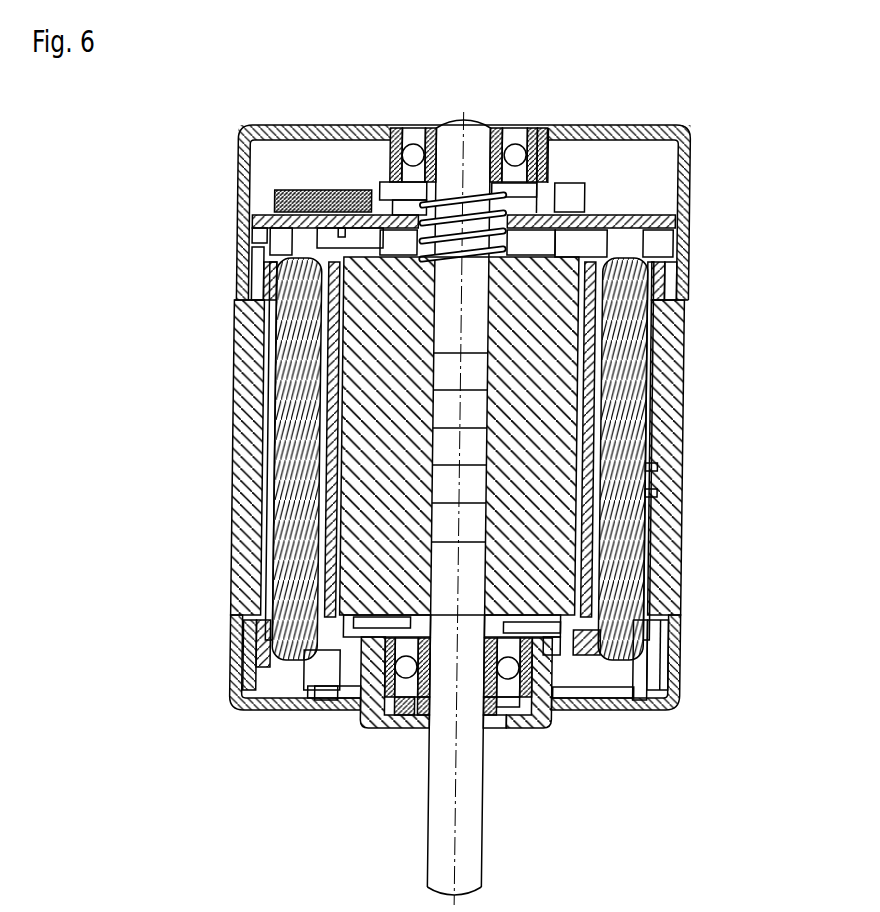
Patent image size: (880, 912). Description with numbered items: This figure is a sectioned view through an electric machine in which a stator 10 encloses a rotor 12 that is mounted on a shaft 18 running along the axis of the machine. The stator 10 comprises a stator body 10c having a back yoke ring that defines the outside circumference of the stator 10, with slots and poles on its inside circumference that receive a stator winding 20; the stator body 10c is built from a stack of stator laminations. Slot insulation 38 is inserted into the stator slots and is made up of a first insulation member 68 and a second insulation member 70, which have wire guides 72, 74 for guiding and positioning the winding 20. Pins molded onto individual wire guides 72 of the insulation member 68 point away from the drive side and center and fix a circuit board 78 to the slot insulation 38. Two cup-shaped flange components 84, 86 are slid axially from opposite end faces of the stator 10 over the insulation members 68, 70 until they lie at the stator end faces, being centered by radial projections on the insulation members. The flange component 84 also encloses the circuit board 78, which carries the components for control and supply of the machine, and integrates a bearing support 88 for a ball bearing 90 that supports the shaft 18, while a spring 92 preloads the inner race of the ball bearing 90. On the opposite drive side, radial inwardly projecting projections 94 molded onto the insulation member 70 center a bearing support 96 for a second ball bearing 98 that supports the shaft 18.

The stator 10 is at (651, 313).
The stator body 10c is at (670, 360).
The rotor 12 is at (541, 555).
The shaft 18 is at (468, 775).
The stator winding 20 is at (622, 390).
The slot insulation 38 is at (660, 497).
The first insulation member 68 is at (656, 425).
The second insulation member 70 is at (655, 528).
The wire guide 72 is at (650, 267).
The wire guide 74 is at (655, 637).
The circuit board 78 is at (637, 222).
The flange component 84 is at (681, 163).
The flange component 86 is at (675, 657).
The bearing support 88 is at (544, 160).
The ball bearing 90 is at (511, 152).
The spring 92 is at (468, 197).
The projections 94 is at (542, 640).
The bearing support 96 is at (556, 722).
The ball bearing 98 is at (560, 673).